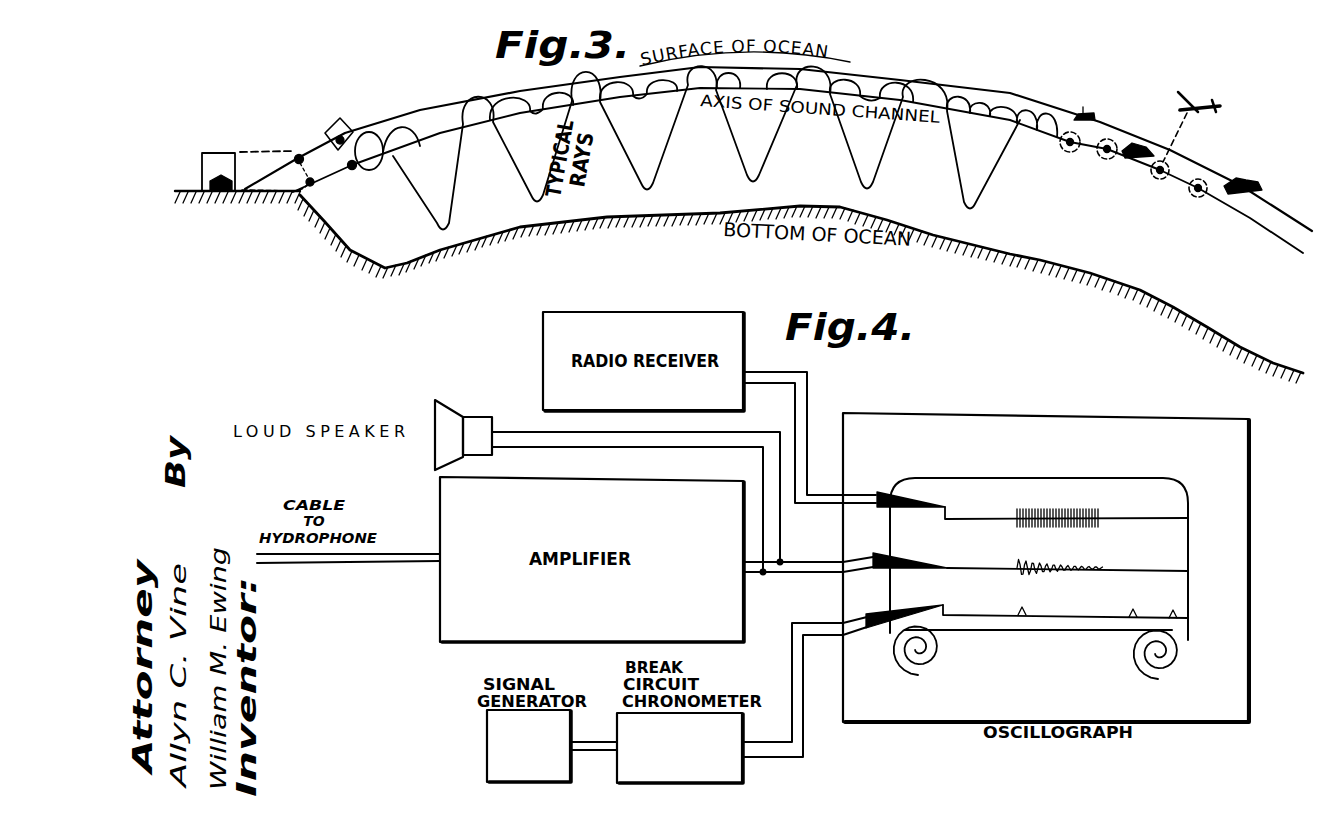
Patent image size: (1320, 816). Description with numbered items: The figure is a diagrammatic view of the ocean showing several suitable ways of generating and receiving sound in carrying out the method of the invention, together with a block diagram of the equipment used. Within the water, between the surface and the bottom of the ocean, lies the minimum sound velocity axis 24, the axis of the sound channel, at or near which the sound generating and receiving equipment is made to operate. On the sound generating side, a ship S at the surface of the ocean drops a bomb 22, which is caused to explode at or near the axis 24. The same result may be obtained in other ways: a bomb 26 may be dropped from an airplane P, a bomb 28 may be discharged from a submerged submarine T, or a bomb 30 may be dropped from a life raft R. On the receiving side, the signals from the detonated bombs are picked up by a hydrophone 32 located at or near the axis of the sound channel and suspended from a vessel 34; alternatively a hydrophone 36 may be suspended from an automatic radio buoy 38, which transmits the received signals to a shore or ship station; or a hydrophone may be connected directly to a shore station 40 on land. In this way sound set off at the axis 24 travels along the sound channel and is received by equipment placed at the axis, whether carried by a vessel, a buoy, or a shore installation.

The bomb 22 is at (1198, 198).
The minimum sound velocity axis 24 is at (332, 177).
The bomb 26 is at (1157, 180).
The bomb 28 is at (1105, 159).
The bomb 30 is at (1066, 152).
The hydrophone 32 is at (354, 168).
The vessel 34 is at (352, 134).
The hydrophone 36 is at (310, 186).
The automatic radio buoy 38 is at (299, 155).
The shore station 40 is at (202, 184).
The life raft R is at (1081, 116).
The submerged submarine T is at (1133, 142).
The airplane P is at (1205, 99).
The ship S is at (1255, 182).